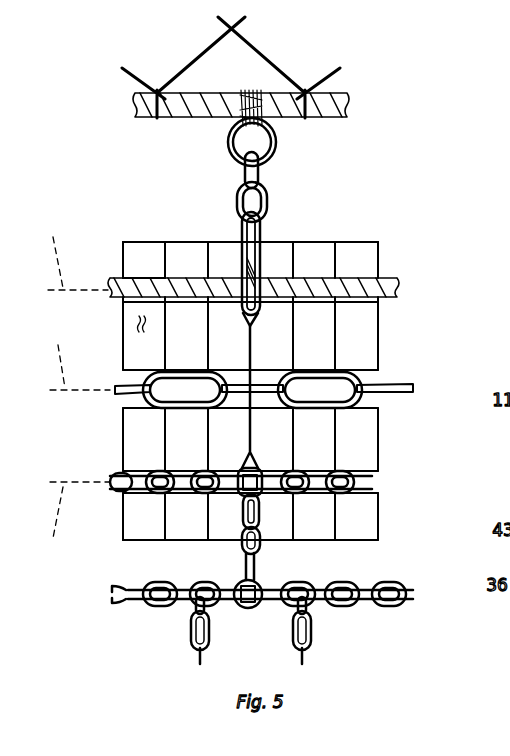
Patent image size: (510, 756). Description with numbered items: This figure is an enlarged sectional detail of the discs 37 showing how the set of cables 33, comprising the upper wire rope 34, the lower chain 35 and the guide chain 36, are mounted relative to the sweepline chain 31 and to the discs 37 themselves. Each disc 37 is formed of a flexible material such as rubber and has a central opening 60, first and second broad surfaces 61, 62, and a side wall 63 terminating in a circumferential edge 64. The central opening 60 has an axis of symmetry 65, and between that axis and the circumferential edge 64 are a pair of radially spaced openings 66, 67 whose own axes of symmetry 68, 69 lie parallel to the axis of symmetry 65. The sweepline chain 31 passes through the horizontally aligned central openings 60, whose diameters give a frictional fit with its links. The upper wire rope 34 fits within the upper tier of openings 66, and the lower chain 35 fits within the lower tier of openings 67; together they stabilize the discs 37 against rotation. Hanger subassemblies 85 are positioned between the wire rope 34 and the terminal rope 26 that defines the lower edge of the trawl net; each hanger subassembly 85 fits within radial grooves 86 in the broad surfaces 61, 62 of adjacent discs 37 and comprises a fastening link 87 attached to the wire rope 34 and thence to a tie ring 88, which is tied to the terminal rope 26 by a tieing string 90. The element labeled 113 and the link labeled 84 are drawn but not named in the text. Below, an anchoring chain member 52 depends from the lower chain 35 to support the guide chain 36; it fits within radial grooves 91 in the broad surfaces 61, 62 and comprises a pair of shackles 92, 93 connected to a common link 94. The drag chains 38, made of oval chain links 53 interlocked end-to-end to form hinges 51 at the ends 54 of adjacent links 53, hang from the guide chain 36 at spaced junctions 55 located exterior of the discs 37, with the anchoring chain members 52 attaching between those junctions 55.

The support frame / hanger 113 is at (257, 35).
The terminal rope 26 is at (217, 92).
The tieing string 90 is at (259, 92).
The tie ring 88 is at (278, 140).
The hanger subassembly 85 is at (288, 182).
The chain link 84 is at (268, 205).
The radial groove 86 is at (243, 248).
The fastening link 87 is at (262, 269).
The set of cables 33 is at (405, 333).
The disc 37 is at (140, 242).
The second broad surface 62 is at (168, 262).
The first broad surface 61 is at (122, 258).
The circumferential edge 64 is at (300, 242).
The upper wire rope 34 is at (386, 280).
The axis of symmetry 68 is at (78, 256).
The axis of symmetry 65 is at (80, 360).
The axis of symmetry 69 is at (80, 517).
The opening 66 is at (124, 280).
The side wall 63 is at (135, 322).
The central opening 60 is at (130, 375).
The sweepline chain 31 is at (252, 390).
The shackle 92 is at (258, 464).
The lower chain 35 is at (371, 493).
The opening 67 is at (130, 470).
The radial groove 91 is at (241, 506).
The common link 94 is at (262, 537).
The anchoring chain member 52 is at (262, 559).
The shackle 93 is at (258, 584).
The guide chain 36 is at (397, 588).
The junction 55 is at (339, 589).
The chain link 53 is at (162, 590).
The hinge 51 is at (209, 630).
The end 54 is at (311, 616).
The drag chain 38 is at (218, 650).